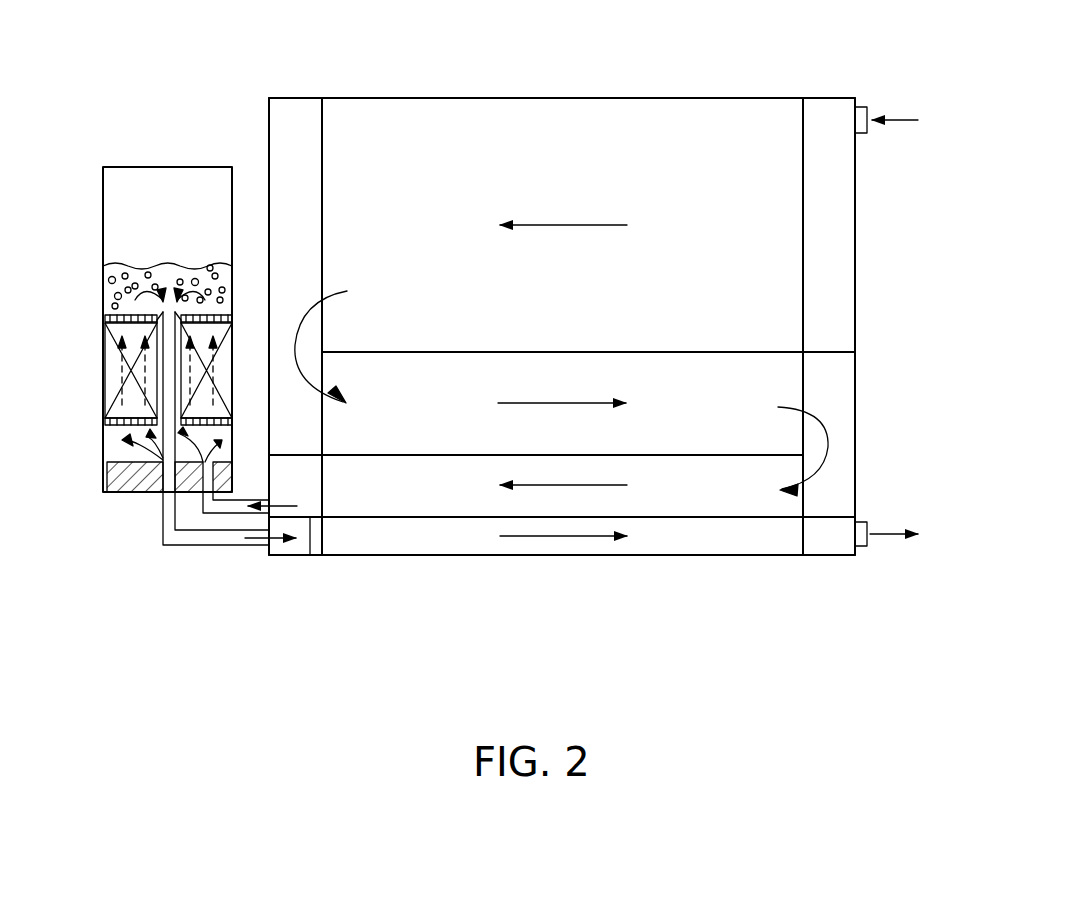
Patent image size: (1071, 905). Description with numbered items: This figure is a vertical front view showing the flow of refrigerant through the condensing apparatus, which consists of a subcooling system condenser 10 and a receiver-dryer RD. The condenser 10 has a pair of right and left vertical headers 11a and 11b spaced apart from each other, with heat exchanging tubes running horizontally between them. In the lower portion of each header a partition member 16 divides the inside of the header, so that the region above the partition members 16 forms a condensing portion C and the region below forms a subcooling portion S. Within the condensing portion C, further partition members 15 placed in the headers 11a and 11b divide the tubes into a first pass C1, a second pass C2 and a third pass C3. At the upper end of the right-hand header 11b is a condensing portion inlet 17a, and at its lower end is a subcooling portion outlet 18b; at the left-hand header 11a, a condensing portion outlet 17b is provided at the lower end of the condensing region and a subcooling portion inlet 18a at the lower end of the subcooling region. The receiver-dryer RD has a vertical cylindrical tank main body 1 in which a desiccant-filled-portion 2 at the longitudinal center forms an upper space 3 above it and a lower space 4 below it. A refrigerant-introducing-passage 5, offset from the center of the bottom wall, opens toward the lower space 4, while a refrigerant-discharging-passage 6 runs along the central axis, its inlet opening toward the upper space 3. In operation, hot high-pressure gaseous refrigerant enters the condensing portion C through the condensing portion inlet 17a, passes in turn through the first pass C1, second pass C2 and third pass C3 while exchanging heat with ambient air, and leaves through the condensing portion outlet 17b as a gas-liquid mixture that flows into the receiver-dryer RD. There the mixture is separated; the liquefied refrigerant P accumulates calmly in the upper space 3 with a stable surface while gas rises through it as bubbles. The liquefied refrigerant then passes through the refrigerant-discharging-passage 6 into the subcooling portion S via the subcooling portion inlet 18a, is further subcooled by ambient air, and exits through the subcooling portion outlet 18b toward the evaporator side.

The tank main body 1 is at (103, 228).
The desiccant-filled-portion 2 is at (113, 370).
The upper space 3 is at (185, 210).
The lower space 4 is at (113, 442).
The refrigerant-introducing-passage 5 is at (207, 483).
The refrigerant-discharging-passage 6 is at (168, 482).
The subcooling system condenser 10 is at (659, 94).
The left-hand header 11a is at (291, 136).
The right-hand header 11b is at (838, 233).
The partition member 15 is at (300, 454).
The partition member 16 is at (310, 555).
The condensing portion inlet 17a is at (862, 106).
The condensing portion outlet 17b is at (270, 499).
The subcooling portion inlet 18a is at (270, 547).
The subcooling portion outlet 18b is at (865, 547).
The receiver-dryer RD is at (153, 166).
The liquefied refrigerant P is at (172, 272).
The condensing portion C is at (550, 334).
The first pass C1 is at (720, 245).
The second pass C2 is at (712, 424).
The third pass C3 is at (714, 506).
The subcooling portion S is at (705, 534).